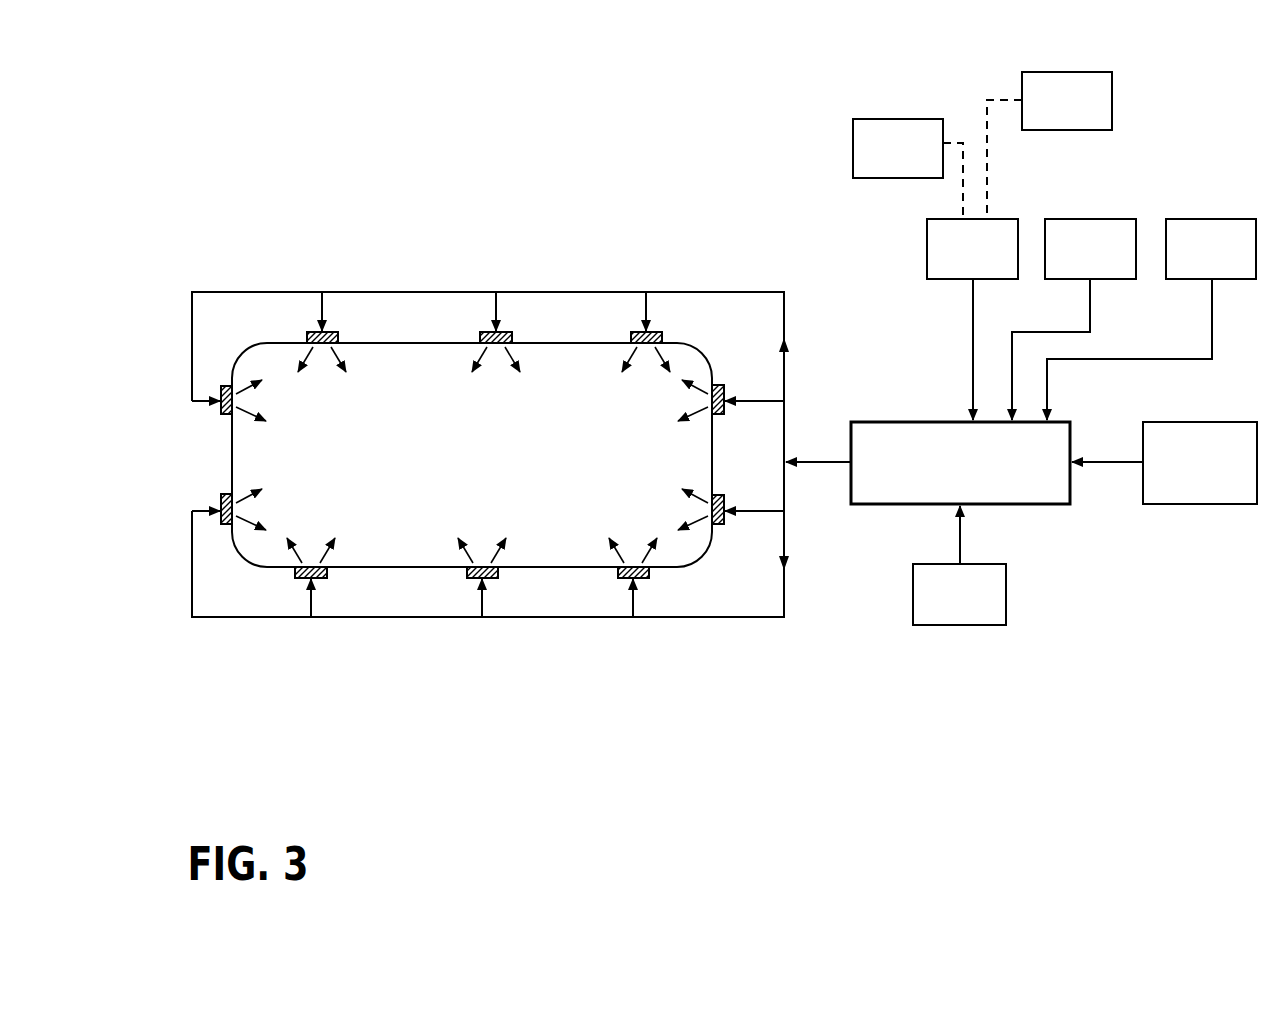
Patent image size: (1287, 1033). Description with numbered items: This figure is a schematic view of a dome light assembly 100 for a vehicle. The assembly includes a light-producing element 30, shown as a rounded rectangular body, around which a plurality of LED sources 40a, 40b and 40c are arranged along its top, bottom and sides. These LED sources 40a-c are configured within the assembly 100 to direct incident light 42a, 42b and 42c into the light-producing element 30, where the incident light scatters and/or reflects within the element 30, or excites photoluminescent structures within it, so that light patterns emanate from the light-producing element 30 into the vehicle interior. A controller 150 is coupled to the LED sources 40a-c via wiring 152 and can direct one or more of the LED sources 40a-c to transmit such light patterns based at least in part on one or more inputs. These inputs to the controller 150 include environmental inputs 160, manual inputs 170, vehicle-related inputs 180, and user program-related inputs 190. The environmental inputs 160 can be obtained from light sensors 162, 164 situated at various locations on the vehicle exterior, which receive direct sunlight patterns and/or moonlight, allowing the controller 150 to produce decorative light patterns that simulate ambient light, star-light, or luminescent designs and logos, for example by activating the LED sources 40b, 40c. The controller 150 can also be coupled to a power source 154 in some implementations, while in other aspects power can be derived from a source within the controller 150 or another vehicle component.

The dome light assembly 100 is at (846, 64).
The light-producing element 30 is at (704, 350).
The wiring 152 is at (786, 422).
The LED sources 40a is at (307, 331).
The LED sources 40b is at (223, 415).
The LED sources 40c is at (720, 383).
The incident light 42a is at (525, 343).
The incident light 42b is at (240, 390).
The incident light 42c is at (257, 527).
The controller 150 is at (946, 474).
The power source 154 is at (946, 612).
The environmental inputs 160 is at (972, 319).
The light sensor 162 is at (886, 162).
The light sensor 164 is at (1053, 115).
The manual inputs 170 is at (1076, 263).
The vehicle-related inputs 180 is at (1197, 263).
The user program-related inputs 190 is at (1186, 478).